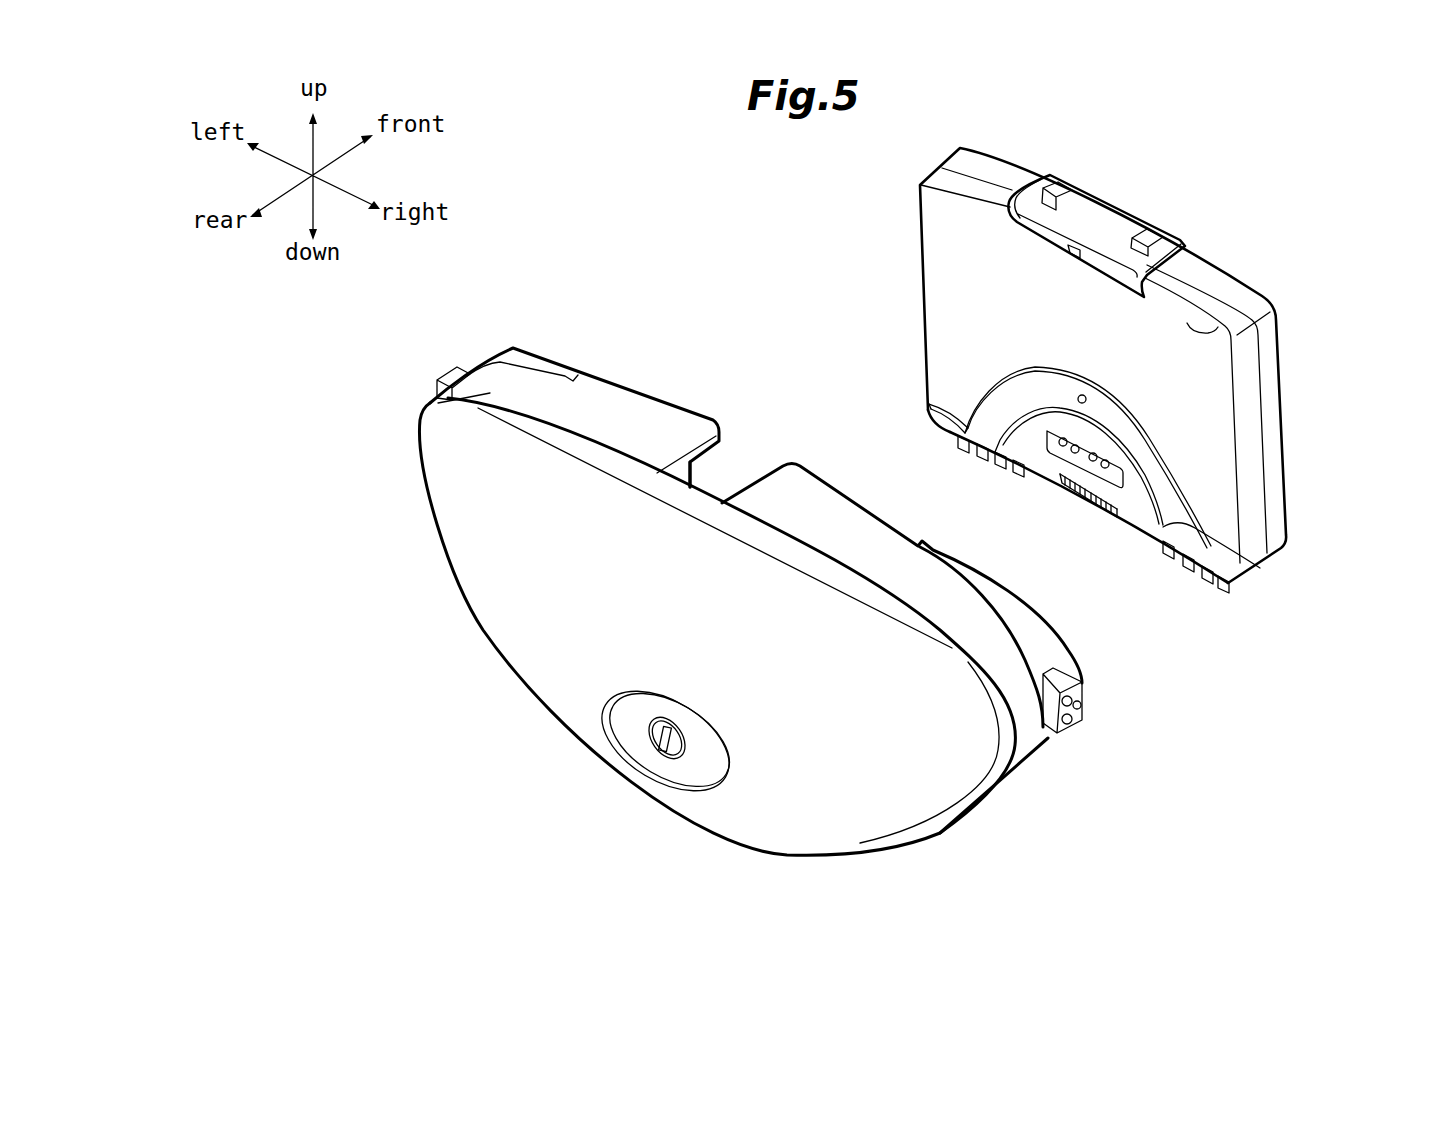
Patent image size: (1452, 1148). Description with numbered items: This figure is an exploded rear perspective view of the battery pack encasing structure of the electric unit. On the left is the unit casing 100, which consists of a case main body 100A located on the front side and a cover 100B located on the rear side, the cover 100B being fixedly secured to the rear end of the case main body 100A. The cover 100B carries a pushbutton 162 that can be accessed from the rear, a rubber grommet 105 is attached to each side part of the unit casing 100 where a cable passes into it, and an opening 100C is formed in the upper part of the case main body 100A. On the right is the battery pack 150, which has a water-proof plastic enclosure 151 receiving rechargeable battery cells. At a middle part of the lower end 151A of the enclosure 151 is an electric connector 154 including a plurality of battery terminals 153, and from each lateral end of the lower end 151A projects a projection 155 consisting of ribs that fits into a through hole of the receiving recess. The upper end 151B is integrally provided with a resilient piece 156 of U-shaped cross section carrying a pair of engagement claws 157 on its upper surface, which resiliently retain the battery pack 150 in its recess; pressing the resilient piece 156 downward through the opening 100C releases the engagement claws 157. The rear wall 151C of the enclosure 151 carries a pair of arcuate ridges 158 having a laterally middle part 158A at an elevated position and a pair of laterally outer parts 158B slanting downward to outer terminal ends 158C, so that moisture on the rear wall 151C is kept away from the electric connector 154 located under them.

The unit casing 100 is at (764, 631).
The case main body 100A is at (627, 408).
The cover 100B is at (805, 828).
The opening 100C is at (684, 477).
The rubber grommet 105 is at (450, 372).
The pushbutton 162 is at (687, 768).
The battery pack 150 is at (1119, 384).
The enclosure 151 is at (1151, 368).
The lower end 151A is at (1130, 530).
The upper end 151B is at (1208, 270).
The rear wall 151C is at (1188, 325).
The battery terminals 153 is at (1090, 505).
The electric connector 154 is at (1064, 490).
The projection 155 is at (980, 456).
The resilient piece 156 is at (1108, 213).
The engagement claws 157 is at (1045, 180).
The arcuate ridges 158 is at (1104, 466).
The laterally middle part 158A is at (1057, 409).
The laterally outer parts 158B is at (1027, 412).
The outer terminal ends 158C is at (928, 404).